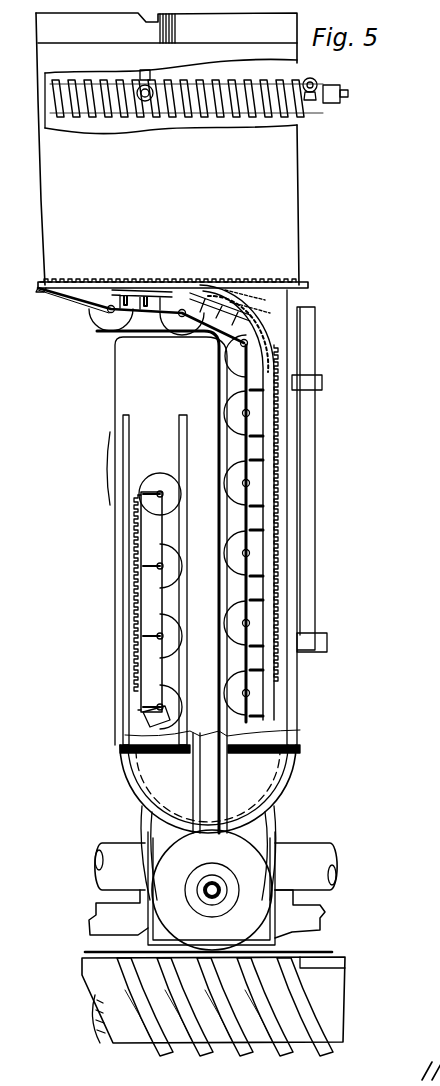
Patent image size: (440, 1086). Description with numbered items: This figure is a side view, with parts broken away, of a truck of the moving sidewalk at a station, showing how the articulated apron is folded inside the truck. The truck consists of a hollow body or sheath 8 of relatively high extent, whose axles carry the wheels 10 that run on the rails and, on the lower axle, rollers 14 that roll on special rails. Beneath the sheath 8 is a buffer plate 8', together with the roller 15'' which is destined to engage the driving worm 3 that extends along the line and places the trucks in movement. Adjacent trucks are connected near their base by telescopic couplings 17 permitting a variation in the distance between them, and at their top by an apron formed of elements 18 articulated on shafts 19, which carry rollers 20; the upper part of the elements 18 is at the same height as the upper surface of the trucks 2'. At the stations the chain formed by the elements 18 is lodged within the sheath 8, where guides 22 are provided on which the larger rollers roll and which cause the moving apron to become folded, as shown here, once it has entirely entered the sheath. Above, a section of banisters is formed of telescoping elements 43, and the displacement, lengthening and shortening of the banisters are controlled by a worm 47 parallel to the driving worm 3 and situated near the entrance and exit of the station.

The banister element 43 is at (283, 25).
The banister worm 47 is at (302, 82).
The upper surface of the trucks 2' is at (173, 273).
The shaft 19 is at (109, 313).
The apron element 18 is at (300, 284).
The roller 20 is at (232, 356).
The guide 22 is at (185, 533).
The sheath 8 is at (205, 617).
The wheel 10 is at (250, 856).
The roller 14 is at (230, 890).
The telescopic coupling 17 is at (107, 876).
The buffer plate 8' is at (216, 914).
The roller 15'' is at (227, 939).
The worm 3 is at (312, 1006).